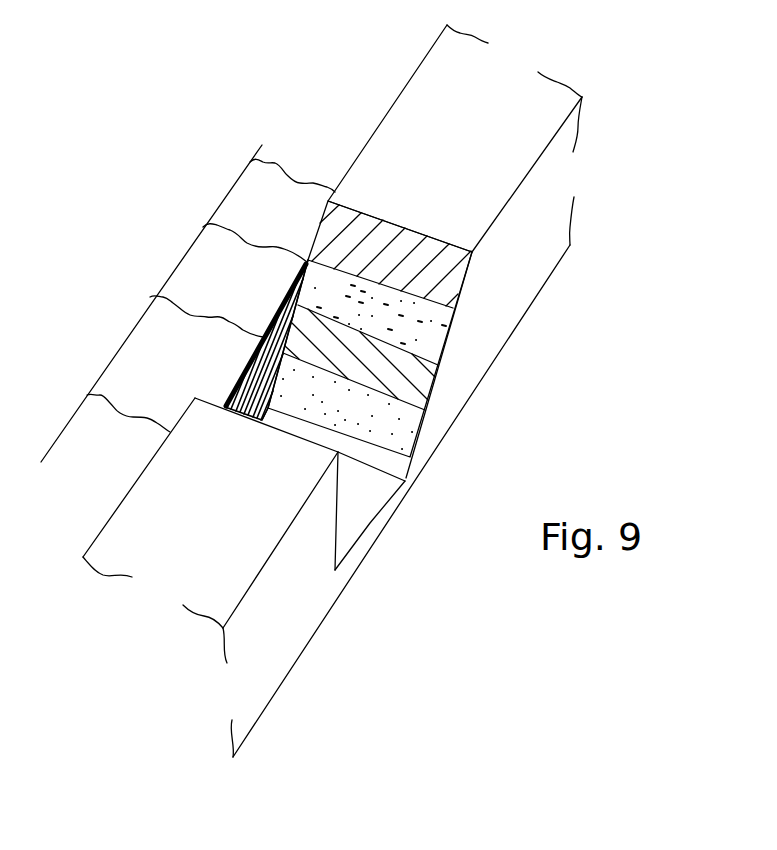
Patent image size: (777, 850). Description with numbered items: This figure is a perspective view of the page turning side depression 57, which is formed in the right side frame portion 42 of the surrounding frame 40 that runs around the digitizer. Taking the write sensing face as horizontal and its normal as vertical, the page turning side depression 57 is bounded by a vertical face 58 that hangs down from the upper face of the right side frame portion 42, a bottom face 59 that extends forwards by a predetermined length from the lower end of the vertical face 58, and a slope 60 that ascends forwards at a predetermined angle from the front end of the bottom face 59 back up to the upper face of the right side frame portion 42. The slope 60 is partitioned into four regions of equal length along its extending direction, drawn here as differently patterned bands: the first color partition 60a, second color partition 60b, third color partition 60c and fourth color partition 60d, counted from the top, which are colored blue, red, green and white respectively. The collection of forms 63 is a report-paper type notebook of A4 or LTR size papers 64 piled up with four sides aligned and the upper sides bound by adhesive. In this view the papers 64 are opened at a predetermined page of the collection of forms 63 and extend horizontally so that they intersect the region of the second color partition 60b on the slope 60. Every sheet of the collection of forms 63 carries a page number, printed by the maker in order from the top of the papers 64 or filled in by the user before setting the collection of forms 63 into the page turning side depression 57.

The surrounding frame 40 is at (489, 122).
The right side frame portion 42 is at (300, 617).
The page turning side depression 57 is at (455, 380).
The vertical face 58 is at (340, 512).
The bottom face 59 is at (380, 478).
The slope 60 is at (468, 285).
The first color partition 60a is at (388, 250).
The second color partition 60b is at (441, 338).
The third color partition 60c is at (433, 400).
The fourth color partition 60d is at (408, 434).
The collection of forms 63 is at (180, 260).
The papers 64 is at (250, 202).